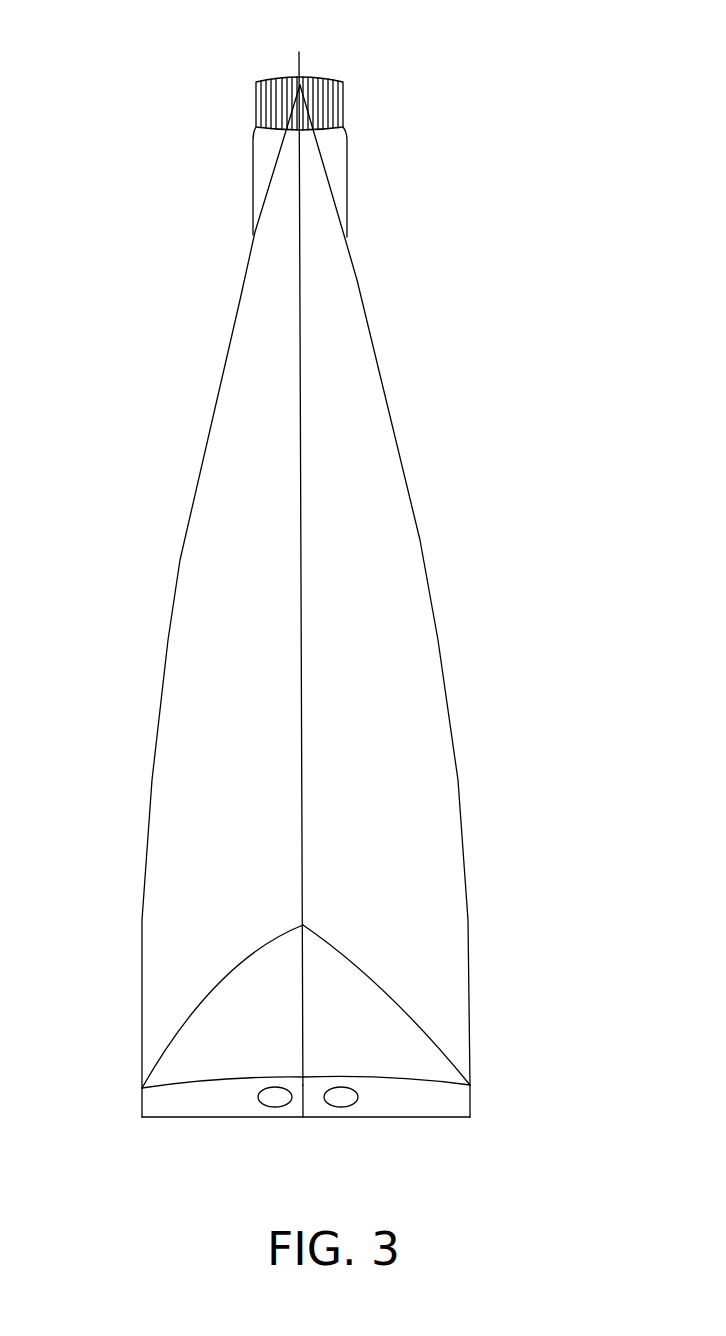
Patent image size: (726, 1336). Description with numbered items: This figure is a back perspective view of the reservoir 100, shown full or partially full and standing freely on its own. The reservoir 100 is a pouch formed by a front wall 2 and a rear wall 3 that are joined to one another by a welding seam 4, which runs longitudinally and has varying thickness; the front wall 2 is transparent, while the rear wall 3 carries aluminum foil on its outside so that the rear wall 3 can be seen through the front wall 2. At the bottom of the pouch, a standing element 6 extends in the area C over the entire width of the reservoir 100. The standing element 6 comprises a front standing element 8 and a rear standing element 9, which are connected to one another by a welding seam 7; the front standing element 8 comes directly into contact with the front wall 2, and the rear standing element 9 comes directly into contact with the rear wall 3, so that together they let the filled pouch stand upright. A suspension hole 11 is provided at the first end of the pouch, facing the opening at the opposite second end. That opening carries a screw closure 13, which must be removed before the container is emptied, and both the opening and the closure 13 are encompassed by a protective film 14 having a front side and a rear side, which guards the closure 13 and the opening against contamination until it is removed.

The reservoir 100 is at (344, 601).
The front wall 2 is at (197, 612).
The rear wall 3 is at (405, 618).
The welding seam 4 is at (299, 62).
The standing element 6 is at (234, 1130).
The welding seam 7 is at (305, 1108).
The front standing element 8 is at (213, 1044).
The rear standing element 9 is at (400, 1043).
The suspension hole 11 is at (283, 1108).
The closure 13 is at (340, 110).
The protective film 14 is at (265, 160).
The area C is at (178, 1118).